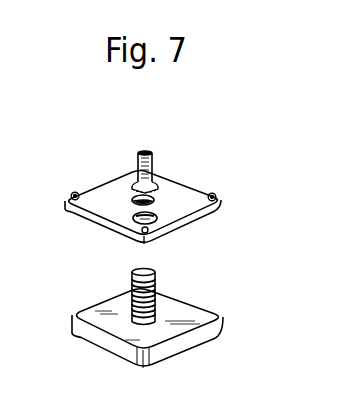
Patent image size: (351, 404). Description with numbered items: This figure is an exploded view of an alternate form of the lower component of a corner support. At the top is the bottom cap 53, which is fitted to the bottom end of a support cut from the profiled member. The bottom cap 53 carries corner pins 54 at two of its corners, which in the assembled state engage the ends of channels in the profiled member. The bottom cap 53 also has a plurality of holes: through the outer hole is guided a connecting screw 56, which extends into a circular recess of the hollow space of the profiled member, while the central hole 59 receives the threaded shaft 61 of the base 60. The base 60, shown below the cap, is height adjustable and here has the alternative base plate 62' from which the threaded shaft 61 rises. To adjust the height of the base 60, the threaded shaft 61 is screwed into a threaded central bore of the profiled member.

The bottom cap 53 is at (180, 195).
The corner pins 54 is at (73, 193).
The connecting screw 56 is at (142, 151).
The central hole 59 is at (134, 197).
The base 60 is at (179, 309).
The threaded shaft 61 is at (160, 293).
The base plate 62' is at (165, 324).